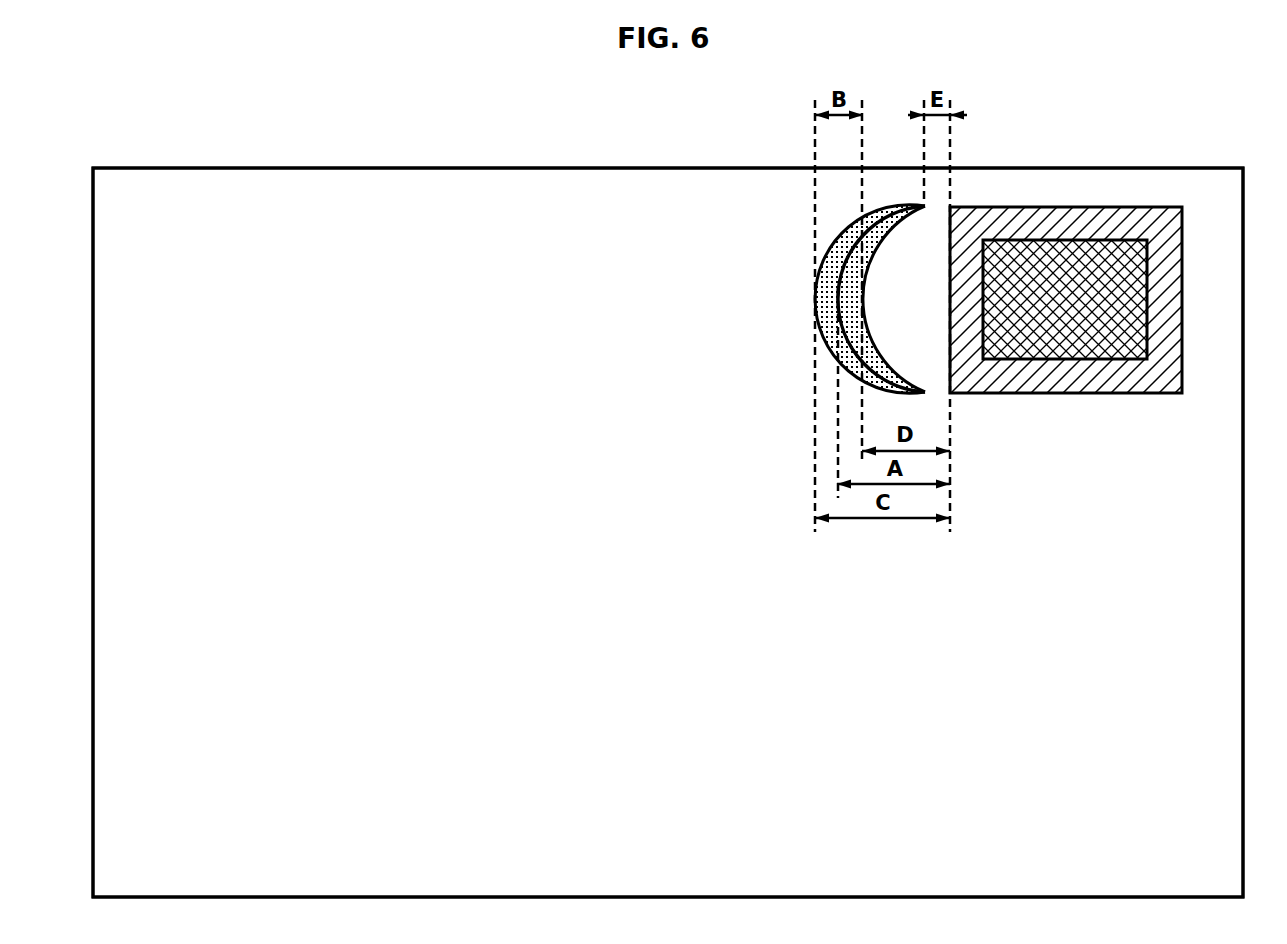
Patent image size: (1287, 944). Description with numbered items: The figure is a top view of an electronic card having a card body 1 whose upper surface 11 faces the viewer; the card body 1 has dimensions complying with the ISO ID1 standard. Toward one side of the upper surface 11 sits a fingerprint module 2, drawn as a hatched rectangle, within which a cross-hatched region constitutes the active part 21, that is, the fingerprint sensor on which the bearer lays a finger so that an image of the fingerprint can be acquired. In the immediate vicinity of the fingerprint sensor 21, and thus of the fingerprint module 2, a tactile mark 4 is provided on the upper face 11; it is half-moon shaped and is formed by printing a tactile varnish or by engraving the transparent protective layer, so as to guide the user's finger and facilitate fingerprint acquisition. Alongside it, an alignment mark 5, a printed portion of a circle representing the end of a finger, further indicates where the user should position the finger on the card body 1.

The card body 1 is at (661, 158).
The upper surface 11 is at (673, 546).
The fingerprint module 2 is at (1065, 176).
The active part 21 is at (1078, 309).
The tactile mark 4 is at (824, 302).
The alignment mark 5 is at (848, 299).